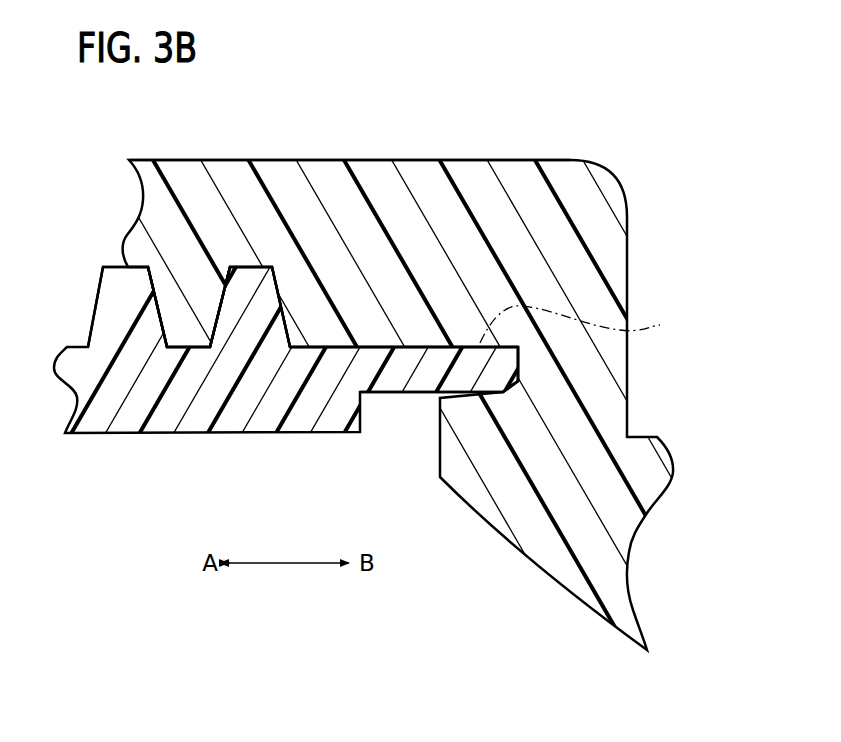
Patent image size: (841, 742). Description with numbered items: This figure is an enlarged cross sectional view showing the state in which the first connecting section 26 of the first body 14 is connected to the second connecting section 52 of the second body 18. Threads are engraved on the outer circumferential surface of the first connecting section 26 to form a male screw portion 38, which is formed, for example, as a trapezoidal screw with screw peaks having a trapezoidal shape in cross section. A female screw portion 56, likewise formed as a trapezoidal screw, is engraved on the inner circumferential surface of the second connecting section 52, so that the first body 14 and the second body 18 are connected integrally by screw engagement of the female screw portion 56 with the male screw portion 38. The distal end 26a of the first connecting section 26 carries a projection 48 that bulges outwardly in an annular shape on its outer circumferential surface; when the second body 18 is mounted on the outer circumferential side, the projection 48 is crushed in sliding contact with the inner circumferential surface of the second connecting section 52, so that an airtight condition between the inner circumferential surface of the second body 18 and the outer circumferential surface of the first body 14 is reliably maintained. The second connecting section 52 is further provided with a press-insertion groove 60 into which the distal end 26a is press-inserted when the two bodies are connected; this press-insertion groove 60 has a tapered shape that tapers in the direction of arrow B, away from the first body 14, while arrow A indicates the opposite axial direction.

The first body 14 is at (117, 442).
The second body 18 is at (537, 146).
The first connecting section 26 is at (262, 433).
The distal end 26a is at (493, 370).
The male screw portion 38 is at (112, 275).
The projection 48 is at (587, 324).
The second connecting section 52 is at (278, 173).
The female screw portion 56 is at (185, 335).
The press-insertion groove 60 is at (432, 360).